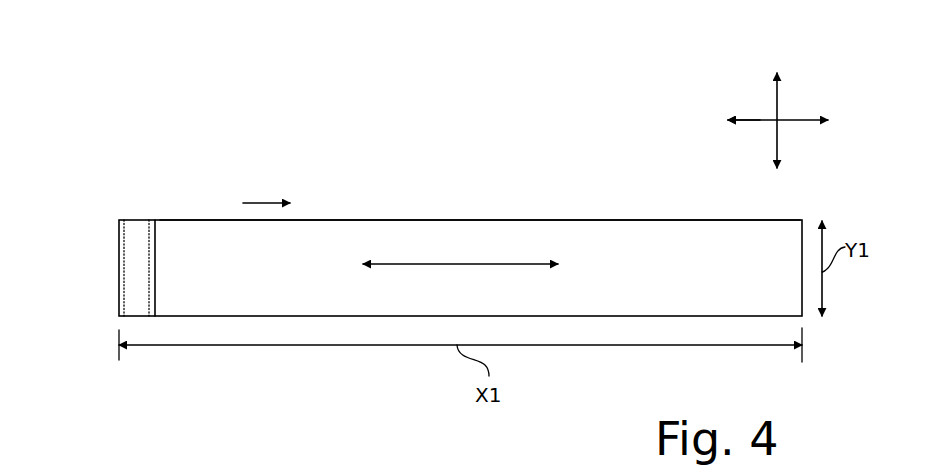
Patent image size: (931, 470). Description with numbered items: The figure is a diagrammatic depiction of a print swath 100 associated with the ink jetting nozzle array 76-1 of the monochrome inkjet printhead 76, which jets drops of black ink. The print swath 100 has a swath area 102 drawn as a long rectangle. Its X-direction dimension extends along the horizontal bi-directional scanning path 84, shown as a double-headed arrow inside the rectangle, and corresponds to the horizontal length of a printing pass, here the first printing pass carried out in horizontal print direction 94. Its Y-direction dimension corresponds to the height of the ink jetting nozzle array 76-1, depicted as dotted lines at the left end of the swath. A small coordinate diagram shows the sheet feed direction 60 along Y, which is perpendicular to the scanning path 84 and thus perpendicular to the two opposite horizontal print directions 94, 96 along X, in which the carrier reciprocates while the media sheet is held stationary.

The monochrome inkjet printhead 76 is at (119, 270).
The ink jetting nozzle array 76-1 is at (148, 230).
The horizontal print direction 94 is at (258, 203).
The horizontal print direction 96 is at (757, 117).
The sheet feed direction 60 is at (777, 105).
The print swath 100 is at (388, 219).
The horizontal bi-directional scanning path 84 is at (457, 264).
The swath area 102 is at (584, 284).